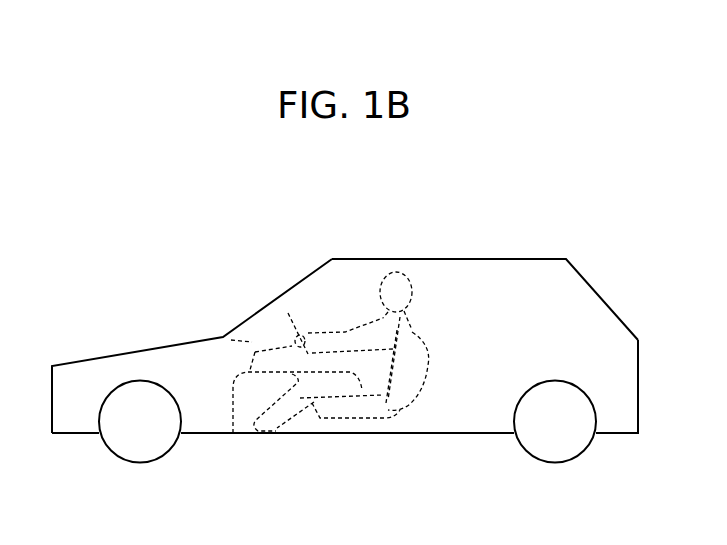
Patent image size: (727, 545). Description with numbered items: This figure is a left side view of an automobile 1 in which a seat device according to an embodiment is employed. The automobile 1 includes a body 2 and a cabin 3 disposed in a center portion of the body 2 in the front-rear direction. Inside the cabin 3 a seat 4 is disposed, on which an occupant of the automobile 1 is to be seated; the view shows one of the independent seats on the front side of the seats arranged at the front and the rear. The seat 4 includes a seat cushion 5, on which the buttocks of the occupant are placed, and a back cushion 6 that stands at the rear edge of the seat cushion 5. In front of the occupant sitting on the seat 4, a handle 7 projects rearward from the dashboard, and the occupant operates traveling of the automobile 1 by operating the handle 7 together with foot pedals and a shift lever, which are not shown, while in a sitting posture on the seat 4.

The automobile 1 is at (345, 327).
The body 2 is at (218, 412).
The cabin 3 is at (510, 280).
The seat 4 is at (422, 424).
The seat cushion 5 is at (382, 416).
The back cushion 6 is at (415, 377).
The handle 7 is at (289, 312).